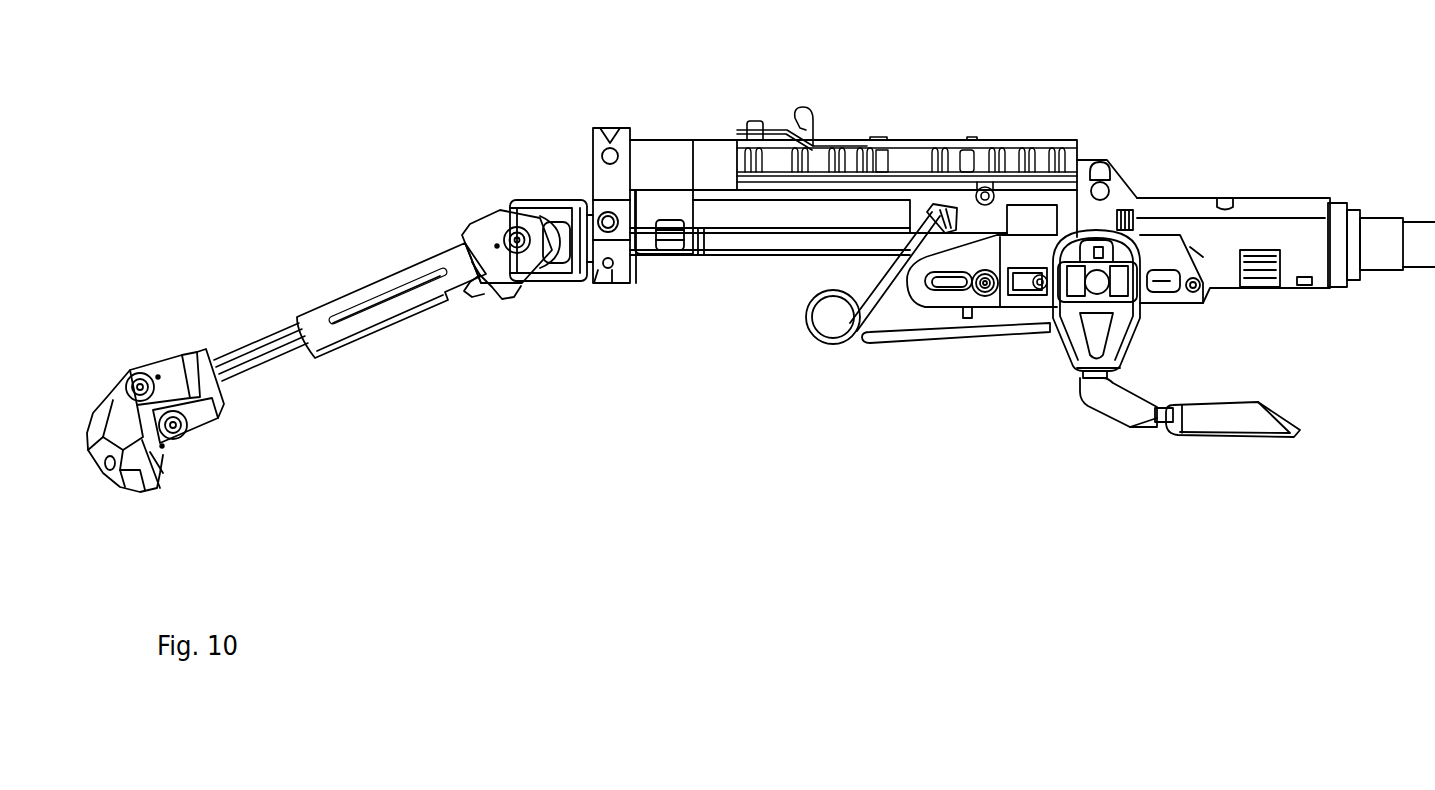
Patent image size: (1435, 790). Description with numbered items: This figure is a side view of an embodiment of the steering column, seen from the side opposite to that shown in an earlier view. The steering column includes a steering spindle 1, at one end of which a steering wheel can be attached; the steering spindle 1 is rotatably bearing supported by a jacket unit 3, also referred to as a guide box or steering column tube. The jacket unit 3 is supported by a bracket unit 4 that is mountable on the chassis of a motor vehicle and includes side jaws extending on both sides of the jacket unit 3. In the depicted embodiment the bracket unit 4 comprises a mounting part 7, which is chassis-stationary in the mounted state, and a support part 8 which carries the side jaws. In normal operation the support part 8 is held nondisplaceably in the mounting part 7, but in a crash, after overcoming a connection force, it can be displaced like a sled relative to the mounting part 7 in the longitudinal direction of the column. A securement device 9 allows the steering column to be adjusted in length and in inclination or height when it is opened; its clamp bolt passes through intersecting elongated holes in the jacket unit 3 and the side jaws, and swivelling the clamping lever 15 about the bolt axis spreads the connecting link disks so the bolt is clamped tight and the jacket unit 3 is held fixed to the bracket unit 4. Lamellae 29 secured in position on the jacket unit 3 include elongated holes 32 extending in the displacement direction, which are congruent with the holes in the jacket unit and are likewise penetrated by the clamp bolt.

The steering spindle 1 is at (767, 242).
The jacket unit 3 is at (1273, 182).
The bracket unit 4 is at (888, 125).
The mounting part 7 is at (1007, 162).
The support part 8 is at (965, 197).
The securement device 9 is at (1150, 342).
The clamping lever 15 is at (1117, 407).
The lamellae 29 is at (1013, 300).
The elongated holes 32 is at (1033, 285).